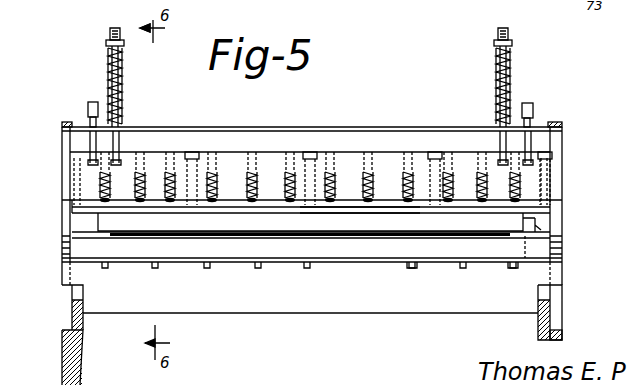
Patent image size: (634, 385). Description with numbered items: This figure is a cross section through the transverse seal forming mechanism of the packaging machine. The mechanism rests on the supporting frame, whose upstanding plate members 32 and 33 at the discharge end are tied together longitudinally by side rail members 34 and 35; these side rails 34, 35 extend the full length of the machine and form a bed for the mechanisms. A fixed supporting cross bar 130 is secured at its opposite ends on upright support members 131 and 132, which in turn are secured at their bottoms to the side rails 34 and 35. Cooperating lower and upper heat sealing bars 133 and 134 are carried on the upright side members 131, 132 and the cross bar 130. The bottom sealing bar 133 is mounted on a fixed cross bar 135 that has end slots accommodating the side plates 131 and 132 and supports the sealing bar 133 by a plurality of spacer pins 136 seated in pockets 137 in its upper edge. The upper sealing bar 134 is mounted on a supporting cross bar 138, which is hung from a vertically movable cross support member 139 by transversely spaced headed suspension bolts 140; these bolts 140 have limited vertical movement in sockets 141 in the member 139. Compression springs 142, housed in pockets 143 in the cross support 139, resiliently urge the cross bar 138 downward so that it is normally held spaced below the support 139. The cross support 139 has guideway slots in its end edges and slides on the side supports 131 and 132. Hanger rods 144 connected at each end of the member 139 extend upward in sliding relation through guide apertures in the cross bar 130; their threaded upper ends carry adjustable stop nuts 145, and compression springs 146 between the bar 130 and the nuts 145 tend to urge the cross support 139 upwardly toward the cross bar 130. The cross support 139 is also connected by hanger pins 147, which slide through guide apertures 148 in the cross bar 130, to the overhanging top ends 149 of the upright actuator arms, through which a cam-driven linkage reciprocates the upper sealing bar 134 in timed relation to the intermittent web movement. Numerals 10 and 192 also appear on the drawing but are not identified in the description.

The plate 10 is at (420, 238).
The upstanding plate member 32 is at (562, 332).
The upstanding plate member 33 is at (83, 367).
The side rail member 34 is at (538, 328).
The side rail member 35 is at (83, 332).
The fixed supporting cross bar 130 is at (132, 127).
The upright support member 131 is at (562, 145).
The upright support member 132 is at (70, 140).
The lower heat sealing bar 133 is at (237, 257).
The upper heat sealing bar 134 is at (170, 228).
The fixed cross bar 135 is at (258, 313).
The spacer pin 136 is at (511, 268).
The pocket 137 is at (410, 268).
The supporting cross bar 138 is at (237, 205).
The cross support member 139 is at (345, 155).
The headed suspension bolt 140 is at (205, 150).
The socket 141 is at (201, 131).
The compression spring 142 is at (340, 205).
The pocket 143 is at (262, 165).
The hanger rod 144 is at (110, 26).
The adjustable stop nut 145 is at (106, 42).
The compression spring 146 is at (123, 60).
The hanger pin 147 is at (90, 120).
The guide aperture 148 is at (560, 124).
The overhanging top end 149 is at (89, 104).
The adjusting screw 192 is at (420, 128).